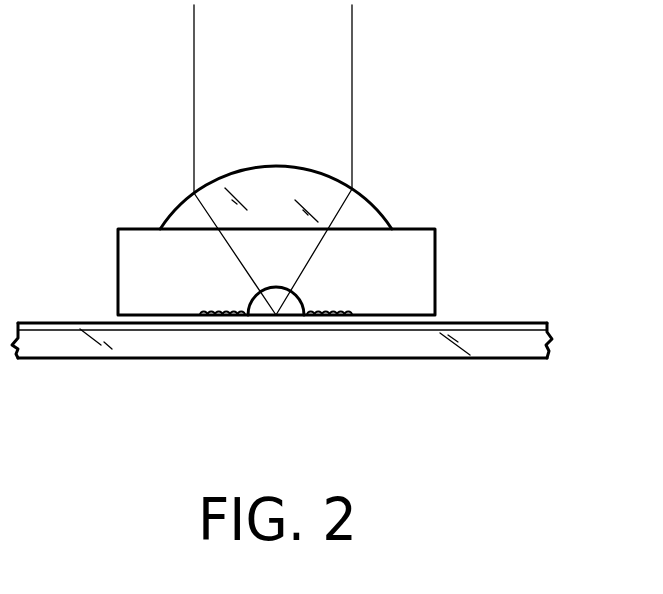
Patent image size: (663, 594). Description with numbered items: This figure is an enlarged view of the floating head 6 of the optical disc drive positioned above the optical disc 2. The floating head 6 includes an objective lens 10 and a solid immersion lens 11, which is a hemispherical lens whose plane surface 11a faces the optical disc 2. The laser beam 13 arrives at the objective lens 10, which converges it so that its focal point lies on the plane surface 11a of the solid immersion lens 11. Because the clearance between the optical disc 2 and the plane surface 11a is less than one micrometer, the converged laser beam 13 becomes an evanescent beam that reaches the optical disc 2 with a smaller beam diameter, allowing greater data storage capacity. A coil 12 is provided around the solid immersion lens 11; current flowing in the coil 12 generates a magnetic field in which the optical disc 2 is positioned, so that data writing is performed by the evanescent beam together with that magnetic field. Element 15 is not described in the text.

The optical disc 2 is at (543, 309).
The floating head 6 is at (111, 194).
The objective lens 10 is at (238, 168).
The solid immersion lens 11 is at (275, 287).
The plane surface 11a is at (262, 318).
The coil 12 is at (213, 317).
The laser beam 13 is at (365, 42).
The conductive bonding material 15 is at (287, 318).